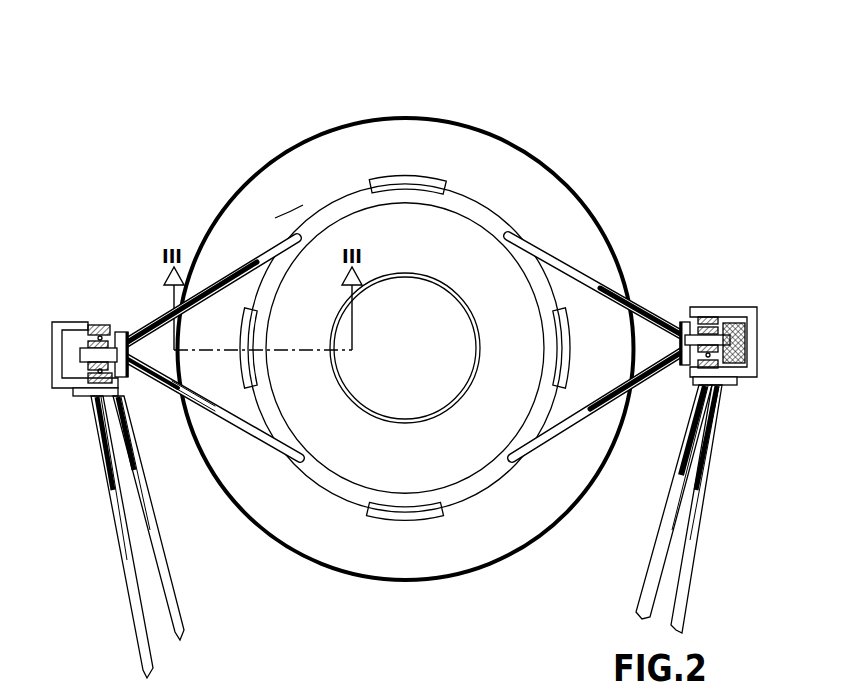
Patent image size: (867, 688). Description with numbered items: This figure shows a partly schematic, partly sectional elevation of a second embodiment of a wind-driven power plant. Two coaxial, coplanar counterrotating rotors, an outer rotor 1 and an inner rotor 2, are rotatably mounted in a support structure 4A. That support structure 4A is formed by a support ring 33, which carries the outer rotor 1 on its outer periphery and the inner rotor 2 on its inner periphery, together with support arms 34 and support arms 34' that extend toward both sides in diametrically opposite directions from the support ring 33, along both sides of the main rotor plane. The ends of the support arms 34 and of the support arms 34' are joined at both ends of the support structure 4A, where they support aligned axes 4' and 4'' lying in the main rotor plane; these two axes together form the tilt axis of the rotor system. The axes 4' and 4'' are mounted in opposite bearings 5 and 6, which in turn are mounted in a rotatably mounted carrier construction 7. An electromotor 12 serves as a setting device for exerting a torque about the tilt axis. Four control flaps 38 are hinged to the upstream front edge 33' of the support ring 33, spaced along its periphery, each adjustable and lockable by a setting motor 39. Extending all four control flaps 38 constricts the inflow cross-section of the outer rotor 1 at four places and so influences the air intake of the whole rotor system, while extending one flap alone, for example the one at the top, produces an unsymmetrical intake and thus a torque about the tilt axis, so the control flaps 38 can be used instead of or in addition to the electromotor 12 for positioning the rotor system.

The outer rotor 1 is at (517, 187).
The inner rotor 2 is at (437, 245).
The support structure 4A is at (296, 211).
The axis 4' is at (79, 308).
The axis 4'' is at (731, 294).
The bearing 5 is at (108, 330).
The bearing 6 is at (702, 315).
The carrier construction 7 is at (700, 501).
The electromotor 12 is at (740, 367).
The support ring 33 is at (405, 282).
The upstream front edge 33' is at (454, 682).
The support arms 34 is at (213, 315).
The support arms 34' is at (603, 339).
The control flaps 38 is at (418, 183).
The setting motor 39 is at (369, 682).